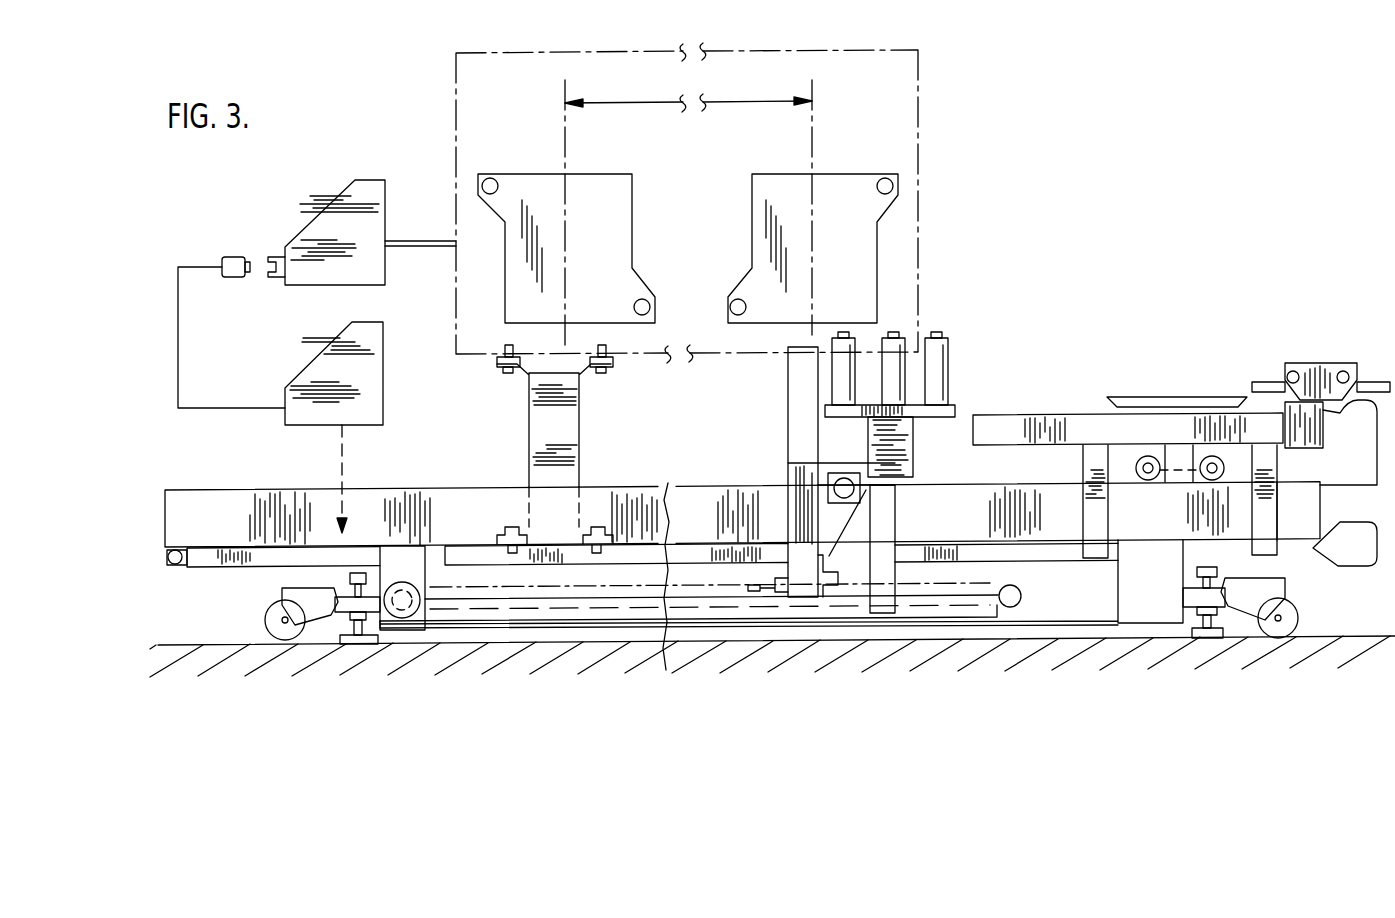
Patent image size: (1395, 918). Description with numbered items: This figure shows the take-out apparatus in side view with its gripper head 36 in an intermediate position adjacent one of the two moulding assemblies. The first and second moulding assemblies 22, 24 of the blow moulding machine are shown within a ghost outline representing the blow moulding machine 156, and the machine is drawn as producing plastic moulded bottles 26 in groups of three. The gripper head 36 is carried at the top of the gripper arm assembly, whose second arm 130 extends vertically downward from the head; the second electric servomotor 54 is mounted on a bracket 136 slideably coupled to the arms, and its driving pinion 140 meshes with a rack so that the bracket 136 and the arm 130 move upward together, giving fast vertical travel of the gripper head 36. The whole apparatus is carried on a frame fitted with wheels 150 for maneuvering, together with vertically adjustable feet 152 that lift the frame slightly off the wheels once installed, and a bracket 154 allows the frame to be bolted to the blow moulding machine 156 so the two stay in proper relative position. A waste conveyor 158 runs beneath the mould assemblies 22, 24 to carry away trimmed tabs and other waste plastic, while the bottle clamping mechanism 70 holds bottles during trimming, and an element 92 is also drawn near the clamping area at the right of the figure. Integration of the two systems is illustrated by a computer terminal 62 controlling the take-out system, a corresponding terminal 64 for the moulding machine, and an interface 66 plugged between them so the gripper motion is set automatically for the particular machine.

The first moulding assembly 22 is at (599, 189).
The second moulding assembly 24 is at (858, 189).
The plastic moulded bottles 26 is at (940, 332).
The gripper head 36 is at (972, 396).
The second electric servomotor 54 is at (852, 490).
The computer terminal 62 is at (372, 386).
The terminal 64 is at (317, 217).
The interface 66 is at (172, 330).
The bottle clamping mechanism 70 is at (1318, 358).
The tray 92 is at (1184, 392).
The second arm 130 is at (890, 535).
The bracket 136 is at (792, 490).
The driving pinion 140 is at (1083, 623).
The wheels 150 is at (271, 620).
The vertically adjustable feet 152 is at (358, 646).
The bracket 154 is at (580, 415).
The blow moulding machine 156 is at (478, 51).
The waste conveyor 158 is at (152, 556).